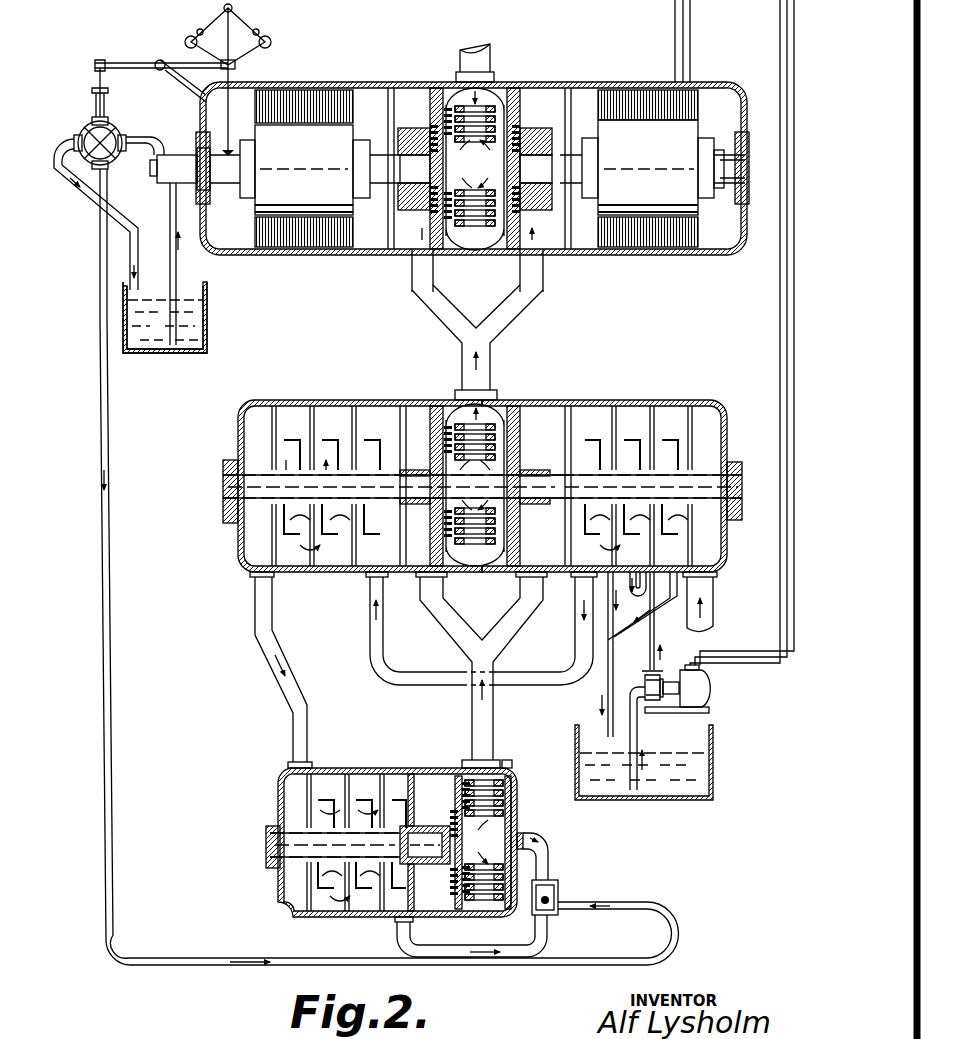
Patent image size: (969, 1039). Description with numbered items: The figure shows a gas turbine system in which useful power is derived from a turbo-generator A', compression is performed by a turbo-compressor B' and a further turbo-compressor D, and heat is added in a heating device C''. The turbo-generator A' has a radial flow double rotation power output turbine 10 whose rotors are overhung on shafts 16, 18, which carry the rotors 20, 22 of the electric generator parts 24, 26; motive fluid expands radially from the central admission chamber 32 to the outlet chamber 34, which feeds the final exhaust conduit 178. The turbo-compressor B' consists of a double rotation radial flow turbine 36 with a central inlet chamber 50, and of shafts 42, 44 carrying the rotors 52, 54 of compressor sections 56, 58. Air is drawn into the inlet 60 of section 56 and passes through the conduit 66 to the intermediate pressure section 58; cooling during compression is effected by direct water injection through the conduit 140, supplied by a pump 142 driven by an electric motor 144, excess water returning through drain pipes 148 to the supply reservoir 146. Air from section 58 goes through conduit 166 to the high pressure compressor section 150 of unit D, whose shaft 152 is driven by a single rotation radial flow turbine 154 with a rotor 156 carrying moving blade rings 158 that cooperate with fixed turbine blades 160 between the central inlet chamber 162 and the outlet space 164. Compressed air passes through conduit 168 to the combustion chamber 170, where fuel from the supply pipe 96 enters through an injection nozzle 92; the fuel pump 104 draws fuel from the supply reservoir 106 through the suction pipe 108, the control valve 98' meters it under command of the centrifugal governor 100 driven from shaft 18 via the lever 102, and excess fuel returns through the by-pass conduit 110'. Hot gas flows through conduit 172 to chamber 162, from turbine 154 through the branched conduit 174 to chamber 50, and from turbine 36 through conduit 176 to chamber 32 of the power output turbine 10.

The power output turbine 10 is at (448, 224).
The shaft 16 is at (560, 182).
The shaft 18 is at (392, 186).
The rotor 20 is at (604, 148).
The rotor 22 is at (348, 145).
The electric generator part 24 is at (620, 95).
The electric generator part 26 is at (340, 95).
The central admission chamber 32 is at (475, 164).
The outlet chamber 34 is at (492, 98).
The radial flow double rotation turbine 36 is at (456, 540).
The shaft 42 is at (566, 486).
The shaft 44 is at (383, 474).
The central inlet chamber 50 is at (475, 485).
The rotor 52 is at (700, 477).
The rotor 54 is at (282, 470).
The compressor section 56 is at (617, 400).
The compressor section 58 is at (305, 400).
The inlet 60 is at (712, 610).
The conduit 66 is at (545, 684).
The injection nozzle 92 is at (556, 908).
The fuel supply conduit 96 is at (116, 948).
The control valve 98' is at (118, 118).
The centrifugal governor 100 is at (248, 22).
The lever 102 is at (140, 63).
The fuel pump 104 is at (162, 182).
The supply reservoir 106 is at (208, 318).
The suction pipe 108 is at (176, 273).
The by-pass or return conduit 110' is at (108, 214).
The conduit 140 is at (655, 642).
The pump 142 is at (646, 680).
The electric motor 144 is at (710, 690).
The supply reservoir 146 is at (712, 774).
The drain pipes 148 is at (607, 698).
The compressor section 150 is at (340, 768).
The shaft 152 is at (414, 826).
The turbine 154 is at (470, 767).
The rotor 156 is at (449, 842).
The moving blade rings 158 is at (505, 792).
The fixed turbine blades 160 is at (465, 880).
The central inlet chamber 162 is at (502, 832).
The space 164 is at (510, 764).
The conduit 166 is at (300, 700).
The conduit 168 is at (448, 950).
The combustion chamber 170 is at (552, 884).
The conduit 172 is at (548, 848).
The conduit 174 is at (482, 648).
The conduit 176 is at (486, 328).
The final exhaust conduit 178 is at (458, 60).
The turbo-generator A' is at (492, 153).
The turbo-compressor B' is at (484, 468).
The heating device C'' is at (579, 881).
The turbo-compressor D is at (380, 768).